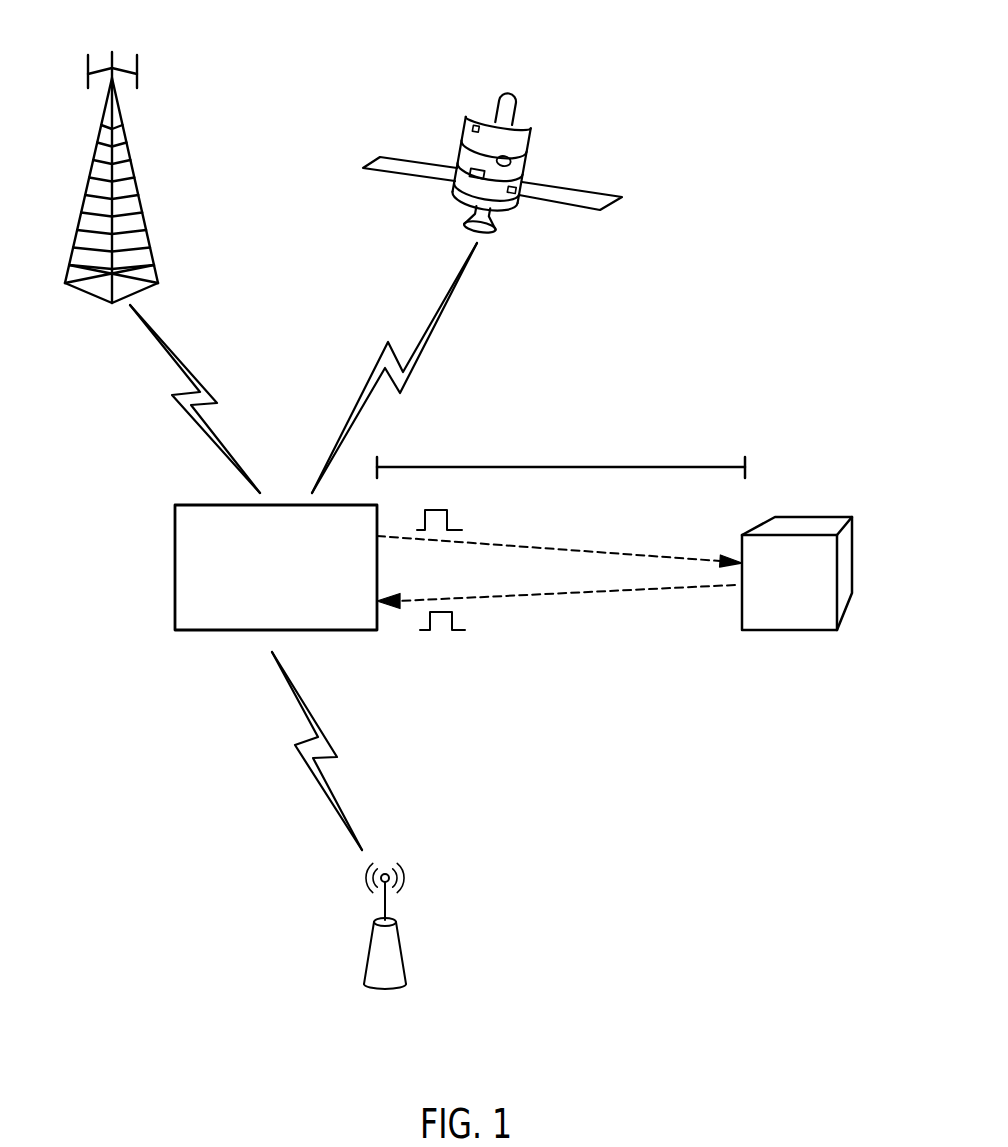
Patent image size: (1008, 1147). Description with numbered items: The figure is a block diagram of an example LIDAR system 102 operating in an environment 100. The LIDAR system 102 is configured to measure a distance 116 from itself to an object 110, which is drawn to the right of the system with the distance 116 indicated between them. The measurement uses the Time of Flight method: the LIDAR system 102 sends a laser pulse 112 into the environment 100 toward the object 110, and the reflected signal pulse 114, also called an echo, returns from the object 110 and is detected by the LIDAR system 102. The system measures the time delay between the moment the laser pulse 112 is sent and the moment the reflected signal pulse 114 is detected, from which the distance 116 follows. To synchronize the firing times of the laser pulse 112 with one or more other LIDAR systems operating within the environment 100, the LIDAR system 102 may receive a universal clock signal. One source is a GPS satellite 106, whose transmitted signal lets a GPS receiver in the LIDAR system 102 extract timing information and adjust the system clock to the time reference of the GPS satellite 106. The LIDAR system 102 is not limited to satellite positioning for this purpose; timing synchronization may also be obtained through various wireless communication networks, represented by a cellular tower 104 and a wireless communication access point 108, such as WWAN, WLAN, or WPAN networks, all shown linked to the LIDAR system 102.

The environment 100 is at (746, 75).
The LIDAR system 102 is at (228, 633).
The cellular tower 104 is at (130, 150).
The GPS satellite 106 is at (522, 118).
The wireless communication access point 108 is at (388, 990).
The object 110 is at (808, 517).
The laser pulse 112 is at (451, 518).
The reflected signal pulse 114 is at (455, 622).
The distance 116 is at (562, 435).